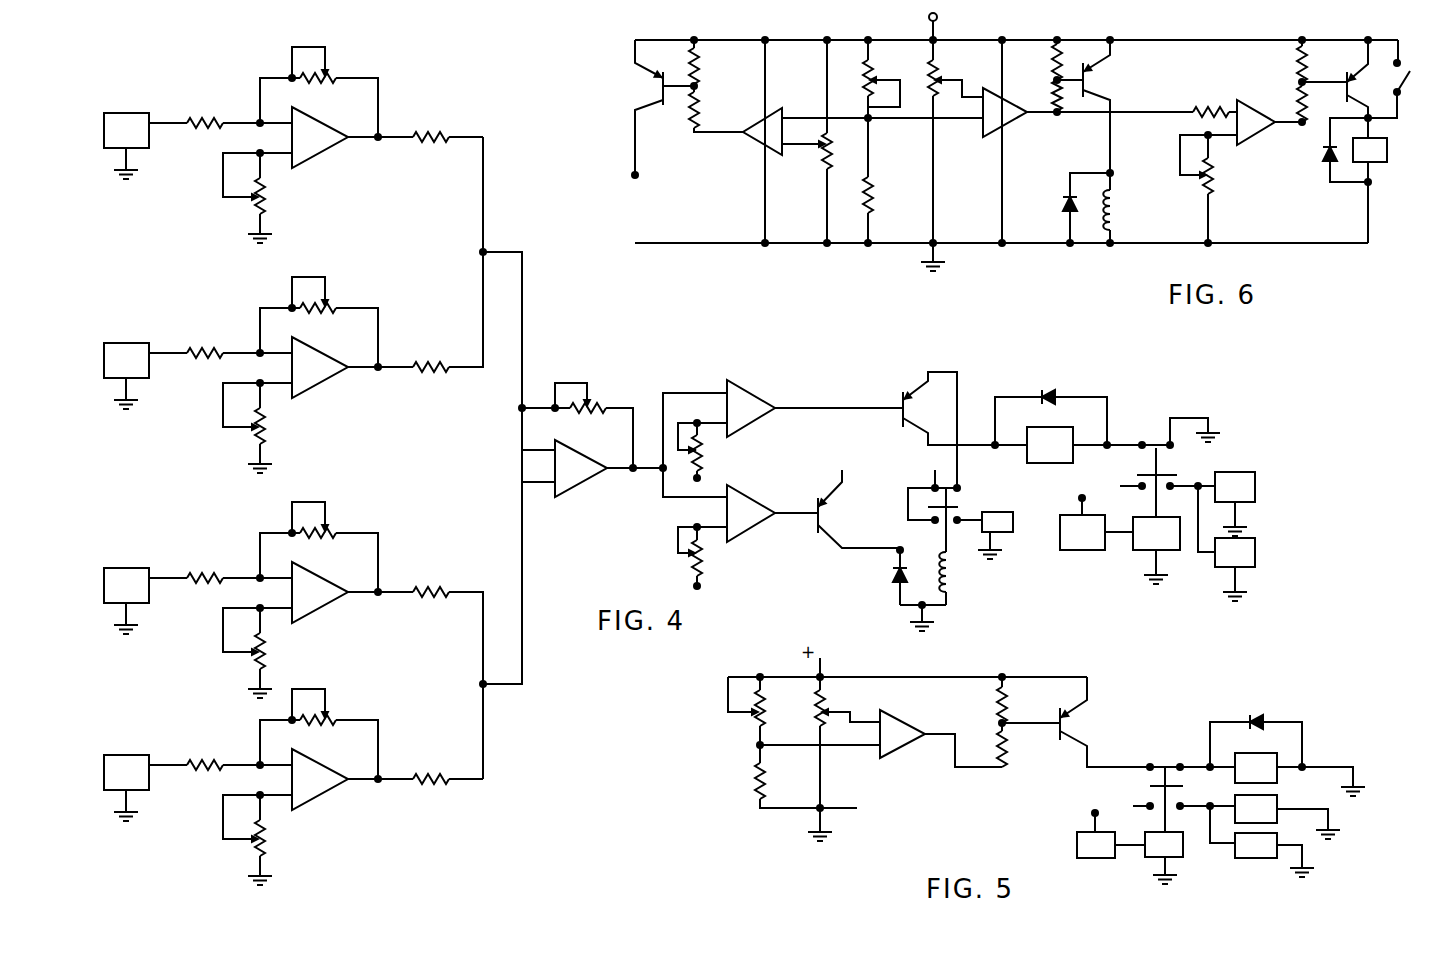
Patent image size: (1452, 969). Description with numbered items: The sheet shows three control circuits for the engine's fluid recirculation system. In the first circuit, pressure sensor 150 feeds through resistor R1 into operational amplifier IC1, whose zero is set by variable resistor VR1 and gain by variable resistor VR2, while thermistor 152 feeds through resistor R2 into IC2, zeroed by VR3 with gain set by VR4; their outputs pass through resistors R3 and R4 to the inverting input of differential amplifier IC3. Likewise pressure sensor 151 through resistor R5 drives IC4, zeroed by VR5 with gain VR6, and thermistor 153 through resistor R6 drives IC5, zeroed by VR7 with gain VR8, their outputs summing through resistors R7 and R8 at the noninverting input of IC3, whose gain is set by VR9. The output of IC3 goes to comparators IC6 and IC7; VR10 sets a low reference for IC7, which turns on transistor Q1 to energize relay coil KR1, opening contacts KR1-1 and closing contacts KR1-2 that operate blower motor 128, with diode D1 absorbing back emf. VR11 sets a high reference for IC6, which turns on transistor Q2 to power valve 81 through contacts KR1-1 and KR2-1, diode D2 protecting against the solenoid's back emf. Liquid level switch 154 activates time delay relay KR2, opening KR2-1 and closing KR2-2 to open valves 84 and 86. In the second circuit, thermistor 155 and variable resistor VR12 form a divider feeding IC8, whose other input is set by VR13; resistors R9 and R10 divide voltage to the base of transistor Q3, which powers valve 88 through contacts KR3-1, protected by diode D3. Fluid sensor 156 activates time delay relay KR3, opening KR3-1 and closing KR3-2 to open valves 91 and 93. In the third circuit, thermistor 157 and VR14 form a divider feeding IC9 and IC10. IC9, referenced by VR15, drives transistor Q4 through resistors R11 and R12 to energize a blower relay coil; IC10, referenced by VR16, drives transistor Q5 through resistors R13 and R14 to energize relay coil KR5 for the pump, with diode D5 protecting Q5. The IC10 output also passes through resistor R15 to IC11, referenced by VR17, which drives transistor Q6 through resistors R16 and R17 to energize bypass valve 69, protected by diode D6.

In FIG. 4, the pressure sensor 150 is at (126, 146).
In FIG. 4, the pressure sensor 151 is at (126, 601).
In FIG. 4, the thermistor 152 is at (126, 376).
In FIG. 4, the thermistor 153 is at (126, 788).
In FIG. 4, the liquid level switch 154 is at (1096, 516).
In FIG. 5, the second thermistor 155 is at (783, 793).
In FIG. 5, the fluid sensor 156 is at (1110, 830).
In FIG. 6, the second thermistor 157 is at (890, 182).
In FIG. 4, the resistor R1 is at (204, 111).
In FIG. 4, the resistor R2 is at (204, 341).
In FIG. 4, the resistor R3 is at (430, 125).
In FIG. 4, the resistor R4 is at (430, 355).
In FIG. 4, the resistor R5 is at (204, 566).
In FIG. 4, the resistor R6 is at (204, 753).
In FIG. 4, the resistor R7 is at (430, 580).
In FIG. 4, the resistor R8 is at (430, 767).
In FIG. 5, the resistor R9 is at (1018, 702).
In FIG. 5, the resistor R10 is at (1023, 745).
In FIG. 6, the resistor R11 is at (714, 63).
In FIG. 6, the resistor R12 is at (716, 108).
In FIG. 6, the resistor R13 is at (1037, 60).
In FIG. 6, the resistor R14 is at (1047, 95).
In FIG. 6, the resistor R15 is at (1147, 100).
In FIG. 6, the resistor R16 is at (1322, 61).
In FIG. 6, the resistor R17 is at (1321, 102).
In FIG. 4, the variable resistor VR1 is at (265, 198).
In FIG. 4, the variable resistor VR2 is at (319, 92).
In FIG. 4, the variable resistor VR3 is at (265, 428).
In FIG. 4, the variable resistor VR4 is at (319, 322).
In FIG. 4, the variable resistor VR5 is at (265, 653).
In FIG. 4, the variable resistor VR6 is at (319, 547).
In FIG. 4, the variable resistor VR7 is at (265, 840).
In FIG. 4, the variable resistor VR8 is at (319, 734).
In FIG. 4, the variable resistor VR9 is at (577, 425).
In FIG. 4, the variable resistor VR10 is at (717, 556).
In FIG. 4, the variable resistor VR11 is at (717, 450).
In FIG. 5, the variable resistor VR12 is at (771, 713).
In FIG. 5, the variable resistor VR13 is at (847, 742).
In FIG. 6, the variable resistor VR14 is at (868, 79).
In FIG. 6, the variable resistor VR15 is at (840, 141).
In FIG. 6, the variable resistor VR16 is at (950, 136).
In FIG. 6, the variable resistor VR17 is at (1224, 189).
In FIG. 4, the operational amplifier IC1 is at (319, 137).
In FIG. 4, the operational amplifier IC2 is at (319, 367).
In FIG. 4, the differential amplifier IC3 is at (579, 452).
In FIG. 4, the operational amplifier IC4 is at (319, 592).
In FIG. 4, the operational amplifier IC5 is at (319, 779).
In FIG. 4, the operational amplifier IC6 is at (815, 408).
In FIG. 4, the operational amplifier IC7 is at (772, 513).
In FIG. 5, the operational amplifier IC8 is at (896, 746).
In FIG. 6, the operational amplifier IC9 is at (751, 134).
In FIG. 6, the operational amplifier IC10 is at (1016, 119).
In FIG. 6, the operational amplifier IC11 is at (1258, 134).
In FIG. 4, the transistor Q1 is at (857, 501).
In FIG. 4, the transistor Q2 is at (947, 430).
In FIG. 5, the transistor Q3 is at (1076, 722).
In FIG. 6, the transistor Q4 is at (655, 109).
In FIG. 6, the transistor Q5 is at (1103, 106).
In FIG. 6, the transistor Q6 is at (1366, 79).
In FIG. 4, the diode D1 is at (885, 575).
In FIG. 4, the diode D2 is at (1051, 406).
In FIG. 5, the diode D3 is at (1243, 730).
In FIG. 6, the diode D5 is at (1072, 210).
In FIG. 6, the diode D6 is at (1333, 151).
In FIG. 4, the relay coil KR1 is at (950, 591).
In FIG. 4, the relay contacts KR1-1 is at (969, 503).
In FIG. 4, the relay contacts KR1-2 is at (932, 518).
In FIG. 4, the time delay relay KR2 is at (1156, 550).
In FIG. 4, the relay contacts KR2-1 is at (1163, 467).
In FIG. 4, the relay contacts KR2-2 is at (1171, 474).
In FIG. 5, the time delay relay KR3 is at (1170, 845).
In FIG. 5, the relay contacts KR3-1 is at (1165, 786).
In FIG. 5, the relay contacts KR3-2 is at (1150, 796).
In FIG. 6, the relay coil KR5 is at (1132, 210).
In FIG. 4, the valve 81 is at (1051, 445).
In FIG. 4, the valve 84 is at (1226, 504).
In FIG. 4, the valve 86 is at (1226, 543).
In FIG. 5, the valve 88 is at (1287, 774).
In FIG. 5, the valve 91 is at (1275, 817).
In FIG. 5, the valve 93 is at (1262, 841).
In FIG. 4, the motor 128 is at (1013, 521).
In FIG. 6, the bypass valve 69 is at (1370, 180).